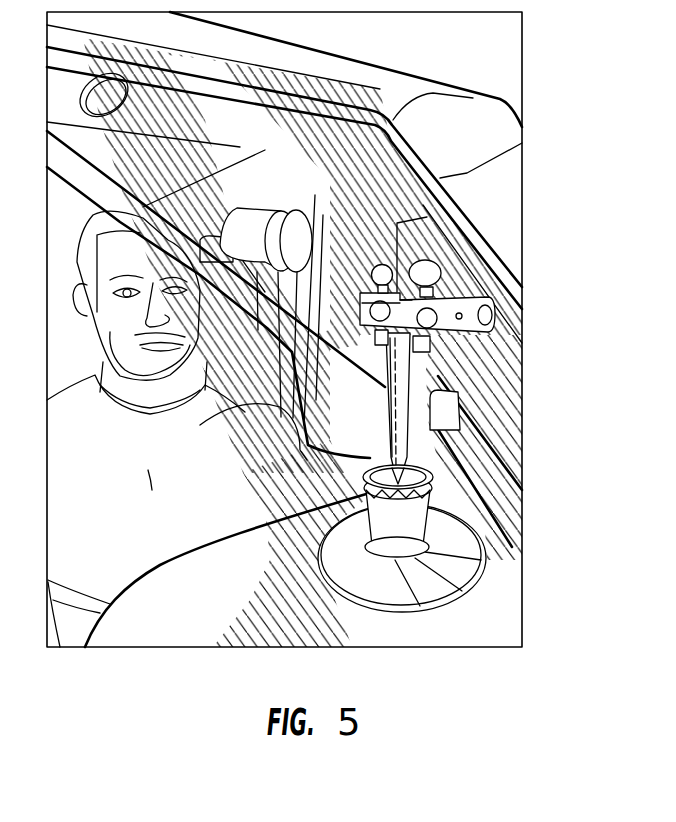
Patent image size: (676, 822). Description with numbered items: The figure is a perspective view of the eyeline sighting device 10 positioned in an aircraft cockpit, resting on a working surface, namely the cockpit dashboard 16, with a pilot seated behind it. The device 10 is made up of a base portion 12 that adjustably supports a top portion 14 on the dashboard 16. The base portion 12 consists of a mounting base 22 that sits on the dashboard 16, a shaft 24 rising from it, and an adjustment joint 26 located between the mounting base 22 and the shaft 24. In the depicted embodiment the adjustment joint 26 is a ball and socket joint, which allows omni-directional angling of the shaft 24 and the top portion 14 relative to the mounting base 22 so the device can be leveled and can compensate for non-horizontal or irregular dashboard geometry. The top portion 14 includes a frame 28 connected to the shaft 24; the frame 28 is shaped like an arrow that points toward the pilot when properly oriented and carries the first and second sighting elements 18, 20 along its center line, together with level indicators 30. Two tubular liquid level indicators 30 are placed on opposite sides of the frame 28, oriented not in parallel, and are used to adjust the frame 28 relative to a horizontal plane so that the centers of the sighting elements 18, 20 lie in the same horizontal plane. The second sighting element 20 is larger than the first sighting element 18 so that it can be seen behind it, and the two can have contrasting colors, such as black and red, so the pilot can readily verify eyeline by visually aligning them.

The eyeline sighting device 10 is at (522, 209).
The base portion 12 is at (448, 472).
The top portion 14 is at (445, 318).
The cockpit dashboard 16 is at (228, 556).
The first sighting element 18 is at (376, 266).
The second sighting element 20 is at (440, 268).
The mounting base 22 is at (455, 550).
The shaft 24 is at (408, 432).
The adjustment joint 26 is at (432, 478).
The frame 28 is at (465, 293).
The level indicator 30 is at (478, 351).